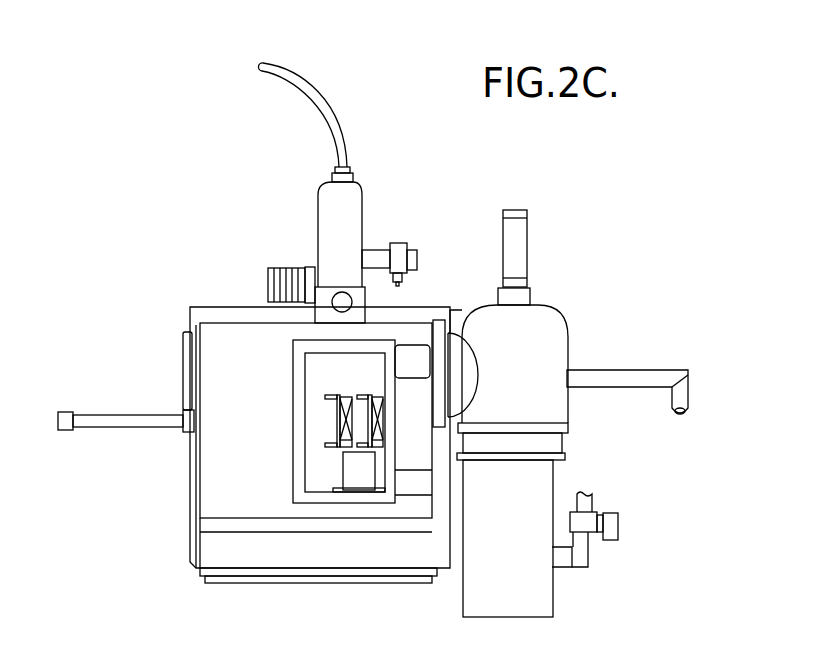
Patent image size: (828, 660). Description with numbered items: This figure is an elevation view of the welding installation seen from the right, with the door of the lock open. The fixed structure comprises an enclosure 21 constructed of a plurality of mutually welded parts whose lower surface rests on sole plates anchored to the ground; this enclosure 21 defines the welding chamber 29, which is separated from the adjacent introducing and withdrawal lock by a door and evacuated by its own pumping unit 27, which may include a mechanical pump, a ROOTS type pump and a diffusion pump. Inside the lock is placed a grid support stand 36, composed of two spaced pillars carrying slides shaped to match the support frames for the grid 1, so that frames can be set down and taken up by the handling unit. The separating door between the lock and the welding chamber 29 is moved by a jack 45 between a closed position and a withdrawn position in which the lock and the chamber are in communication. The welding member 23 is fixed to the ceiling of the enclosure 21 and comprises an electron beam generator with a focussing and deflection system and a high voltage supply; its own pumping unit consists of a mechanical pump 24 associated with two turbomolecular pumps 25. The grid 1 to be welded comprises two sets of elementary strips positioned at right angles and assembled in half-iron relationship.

The grid 1 is at (345, 422).
The enclosure 21 is at (210, 300).
The welding member 23 is at (343, 202).
The mechanical pump 24 is at (287, 285).
The turbomolecular pumps 25 is at (397, 250).
The pumping unit 27 is at (576, 365).
The welding chamber 29 is at (225, 493).
The grid support stand 36 is at (340, 468).
The jack 45 is at (132, 420).